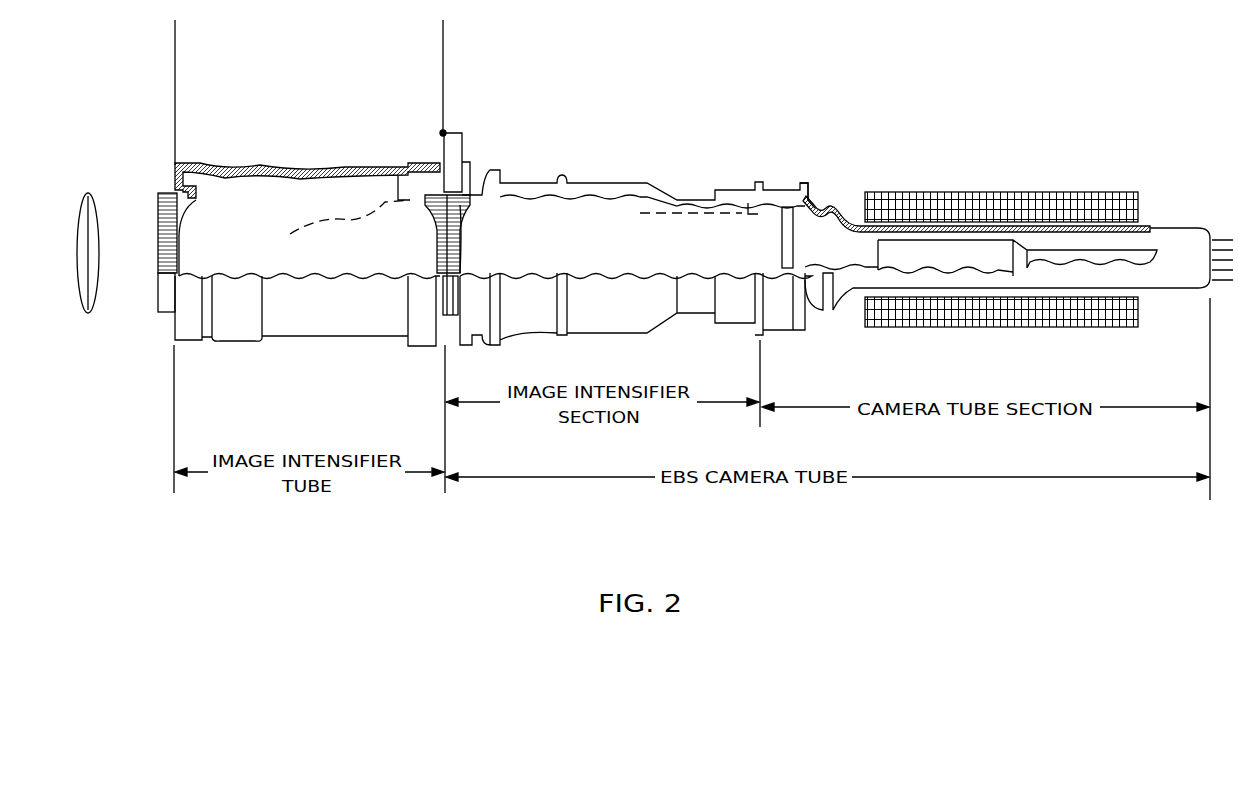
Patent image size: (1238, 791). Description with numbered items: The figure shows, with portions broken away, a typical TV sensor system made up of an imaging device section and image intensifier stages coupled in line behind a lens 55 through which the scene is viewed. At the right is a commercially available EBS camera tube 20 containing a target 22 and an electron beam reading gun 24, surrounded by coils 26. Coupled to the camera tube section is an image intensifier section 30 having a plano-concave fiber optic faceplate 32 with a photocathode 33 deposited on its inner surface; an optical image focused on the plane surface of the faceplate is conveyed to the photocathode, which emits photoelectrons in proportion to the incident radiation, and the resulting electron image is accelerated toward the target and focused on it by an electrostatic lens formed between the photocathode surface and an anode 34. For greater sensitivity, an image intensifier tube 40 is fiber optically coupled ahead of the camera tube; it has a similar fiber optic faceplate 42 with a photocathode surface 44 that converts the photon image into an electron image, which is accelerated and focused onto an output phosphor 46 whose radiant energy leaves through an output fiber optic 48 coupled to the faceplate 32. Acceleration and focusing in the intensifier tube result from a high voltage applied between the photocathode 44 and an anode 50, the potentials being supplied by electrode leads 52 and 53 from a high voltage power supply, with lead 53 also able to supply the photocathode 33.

The TV camera tube 20 is at (850, 205).
The target 22 is at (812, 208).
The electron beam reading gun 24 is at (880, 245).
The focusing coil 26 is at (1038, 192).
The image intensifier section 30 is at (623, 173).
The fiber optic faceplate 32 is at (462, 225).
The photocathode 33 is at (462, 252).
The anode 34 is at (628, 234).
The image intensifier tube 40 is at (326, 165).
The fiber optic faceplate 42 is at (157, 213).
The photocathode surface 44 is at (183, 232).
The output phosphor 46 is at (427, 222).
The output fiber optic 48 is at (440, 258).
The anode 50 is at (327, 218).
The electrode lead 52 is at (177, 100).
The electrode lead 53 is at (444, 76).
The lens 55 is at (84, 212).